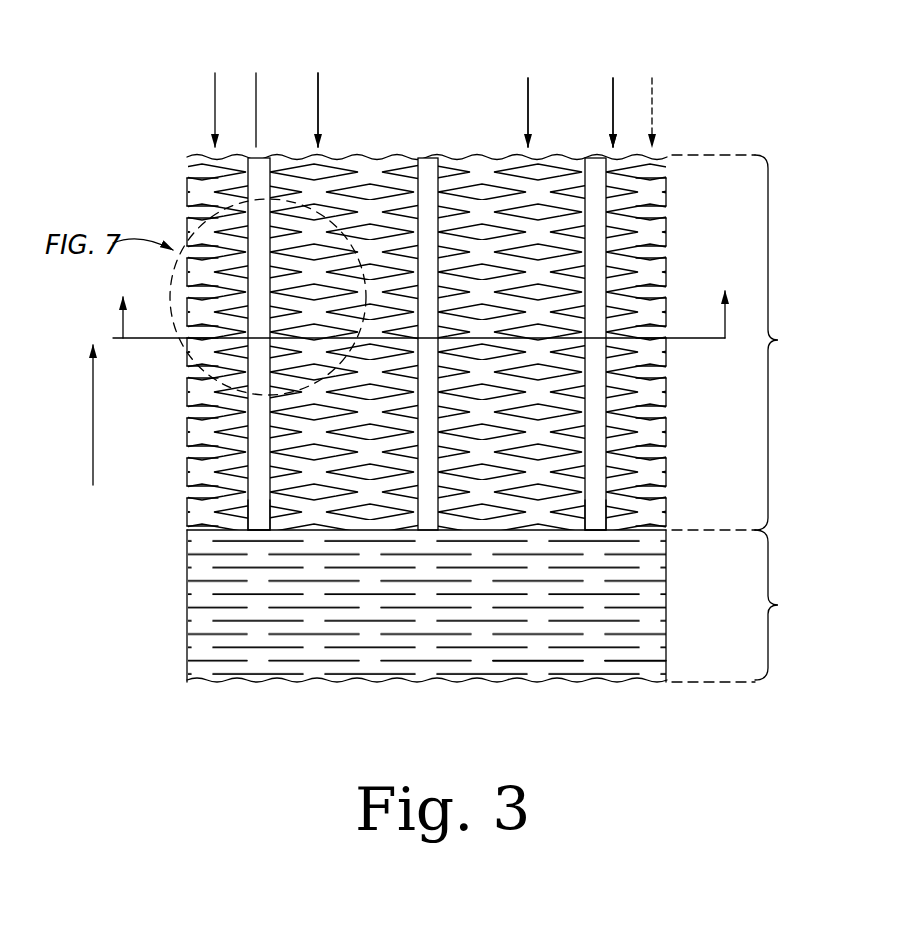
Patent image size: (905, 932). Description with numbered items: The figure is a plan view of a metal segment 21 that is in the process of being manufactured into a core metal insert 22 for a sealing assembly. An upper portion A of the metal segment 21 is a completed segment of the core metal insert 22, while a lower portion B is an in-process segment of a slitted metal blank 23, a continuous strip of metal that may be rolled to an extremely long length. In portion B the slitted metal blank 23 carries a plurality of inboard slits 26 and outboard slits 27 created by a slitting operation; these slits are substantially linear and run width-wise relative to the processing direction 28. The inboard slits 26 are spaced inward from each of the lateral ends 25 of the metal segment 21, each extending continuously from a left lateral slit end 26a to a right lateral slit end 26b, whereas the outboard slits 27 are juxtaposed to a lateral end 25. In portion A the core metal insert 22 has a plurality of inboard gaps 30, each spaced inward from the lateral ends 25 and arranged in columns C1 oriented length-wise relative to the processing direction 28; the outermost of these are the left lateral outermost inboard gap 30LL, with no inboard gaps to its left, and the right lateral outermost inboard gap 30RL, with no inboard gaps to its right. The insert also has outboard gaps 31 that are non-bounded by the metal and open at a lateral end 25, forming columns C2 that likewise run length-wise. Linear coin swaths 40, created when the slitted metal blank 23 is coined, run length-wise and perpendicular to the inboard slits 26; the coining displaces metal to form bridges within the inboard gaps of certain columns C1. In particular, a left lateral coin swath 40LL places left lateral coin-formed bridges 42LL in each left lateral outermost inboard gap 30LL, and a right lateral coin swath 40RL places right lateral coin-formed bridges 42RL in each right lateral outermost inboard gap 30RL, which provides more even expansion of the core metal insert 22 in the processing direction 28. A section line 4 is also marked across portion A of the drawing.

The metal segment 21 is at (683, 92).
The core metal insert 22 is at (678, 186).
The slitted metal blank 23 is at (673, 647).
The lateral end 25 is at (187, 437).
The inboard slit 26 is at (257, 645).
The left lateral slit end 26a is at (545, 650).
The right lateral slit end 26b is at (637, 650).
The outboard slit 27 is at (205, 580).
The processing direction 28 is at (93, 406).
The inboard gap 30 is at (327, 172).
The left lateral outermost inboard gap 30LL is at (240, 430).
The right lateral outermost inboard gap 30RL is at (620, 345).
The outboard gap 31 is at (200, 214).
The linear coin swath 40 is at (430, 150).
The left lateral coin swath 40LL is at (265, 155).
The right lateral coin swath 40RL is at (593, 155).
The left lateral coin-formed bridge 42LL is at (235, 511).
The right lateral coin-formed bridge 42RL is at (614, 498).
The section line 4- 4 is at (425, 299).
The portion A is at (789, 341).
The portion B is at (789, 610).
The column of inboard gaps C1 is at (441, 96).
The column of outboard gaps C2 is at (441, 96).